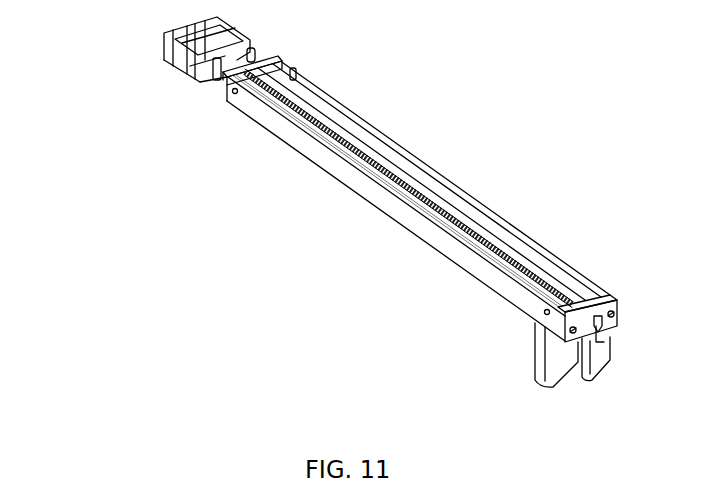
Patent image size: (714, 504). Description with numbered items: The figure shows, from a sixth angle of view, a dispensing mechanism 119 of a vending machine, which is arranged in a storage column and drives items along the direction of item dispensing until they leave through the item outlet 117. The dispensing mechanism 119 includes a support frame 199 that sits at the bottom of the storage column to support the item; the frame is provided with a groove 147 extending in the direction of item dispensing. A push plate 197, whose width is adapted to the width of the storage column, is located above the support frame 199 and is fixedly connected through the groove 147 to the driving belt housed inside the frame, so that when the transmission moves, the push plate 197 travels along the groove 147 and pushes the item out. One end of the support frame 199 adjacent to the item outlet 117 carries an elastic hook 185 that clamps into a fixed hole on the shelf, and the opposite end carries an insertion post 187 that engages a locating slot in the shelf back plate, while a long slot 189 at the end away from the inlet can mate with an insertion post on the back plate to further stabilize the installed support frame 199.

The dispensing mechanism 119 is at (511, 62).
The item outlet 117 is at (137, 49).
The support frame 199 is at (280, 130).
The groove 147 is at (378, 186).
The elastic hook 185 is at (200, 80).
The push plate 197 is at (533, 340).
The insertion post 187 is at (557, 380).
The long slot 189 is at (600, 346).